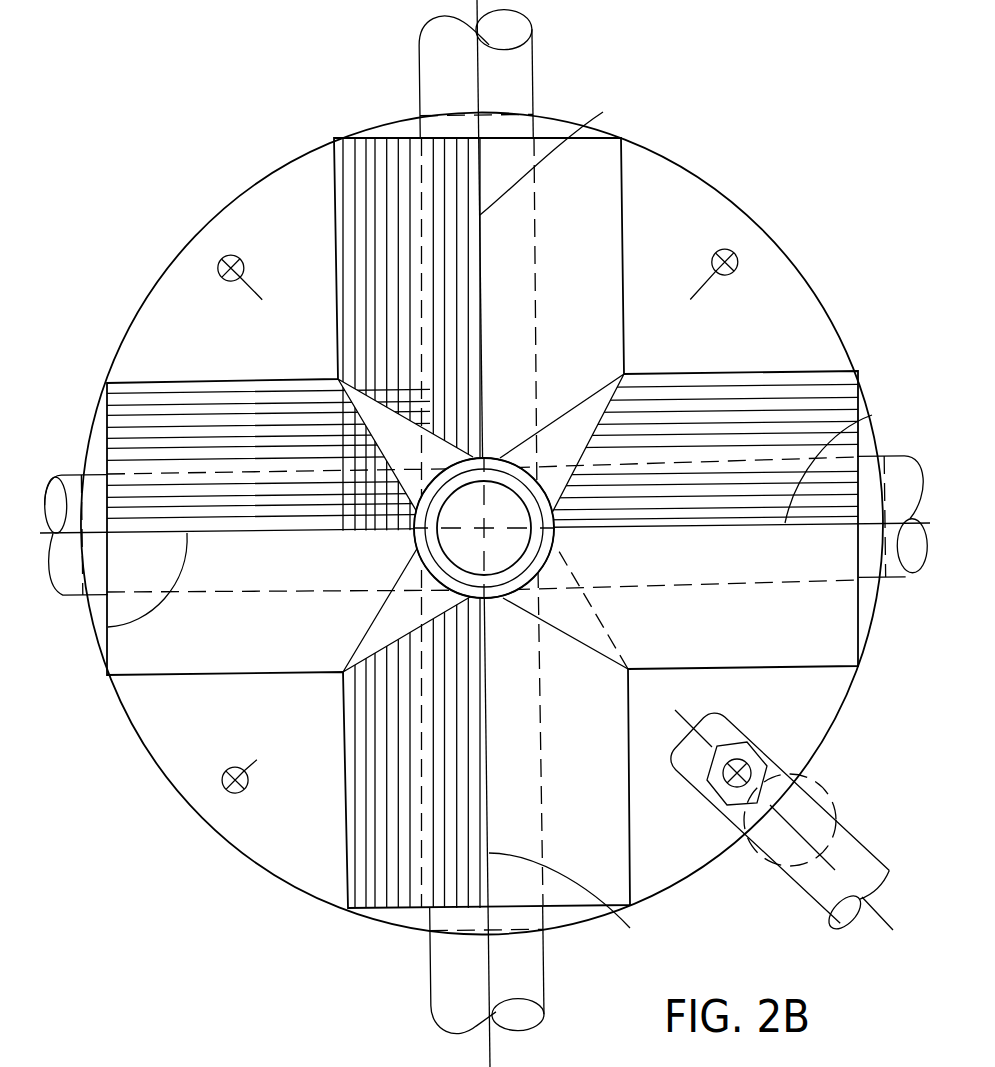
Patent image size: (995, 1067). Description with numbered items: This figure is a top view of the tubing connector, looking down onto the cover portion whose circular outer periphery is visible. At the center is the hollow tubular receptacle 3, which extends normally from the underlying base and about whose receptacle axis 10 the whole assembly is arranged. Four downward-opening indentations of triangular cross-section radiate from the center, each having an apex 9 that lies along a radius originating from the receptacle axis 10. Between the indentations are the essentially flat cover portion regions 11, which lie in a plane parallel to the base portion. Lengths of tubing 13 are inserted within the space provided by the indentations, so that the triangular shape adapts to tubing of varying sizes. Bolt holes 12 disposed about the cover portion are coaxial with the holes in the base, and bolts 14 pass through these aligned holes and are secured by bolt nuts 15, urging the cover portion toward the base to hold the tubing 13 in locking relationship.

The hollow tubular receptacle 3 is at (484, 548).
The apex 9 is at (88, 621).
The receptacle axis 10 is at (482, 523).
The cover portion regions 11 is at (275, 207).
The bolt holes 12 is at (187, 253).
The tubing 13 is at (533, 81).
The bolts 14 is at (748, 773).
The bolt nuts 15 is at (755, 794).